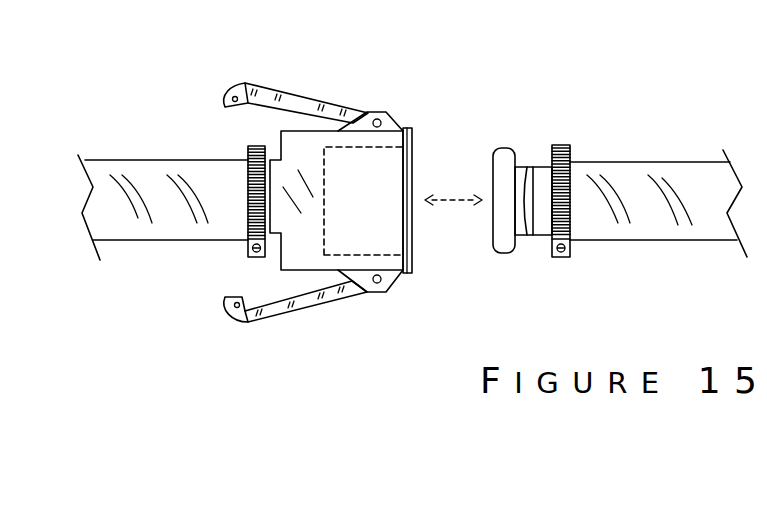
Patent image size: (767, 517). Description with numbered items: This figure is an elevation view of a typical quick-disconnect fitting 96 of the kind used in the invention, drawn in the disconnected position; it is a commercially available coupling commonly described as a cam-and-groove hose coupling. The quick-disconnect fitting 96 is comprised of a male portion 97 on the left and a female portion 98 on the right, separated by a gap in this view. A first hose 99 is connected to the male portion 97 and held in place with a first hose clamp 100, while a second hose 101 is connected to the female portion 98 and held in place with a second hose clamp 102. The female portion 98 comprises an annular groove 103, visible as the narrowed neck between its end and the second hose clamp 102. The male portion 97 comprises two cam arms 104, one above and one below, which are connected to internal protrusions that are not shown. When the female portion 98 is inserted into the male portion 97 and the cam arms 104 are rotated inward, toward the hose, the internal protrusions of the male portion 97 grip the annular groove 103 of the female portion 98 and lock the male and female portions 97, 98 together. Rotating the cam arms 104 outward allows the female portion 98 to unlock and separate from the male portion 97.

The quick-disconnect fitting 96 is at (575, 58).
The male portion 97 is at (373, 295).
The female portion 98 is at (538, 257).
The first hose 99 is at (168, 232).
The first hose clamp 100 is at (248, 243).
The second hose 101 is at (660, 230).
The second hose clamp 102 is at (563, 145).
The annular groove 103 is at (527, 167).
The cam arms 104 is at (241, 82).